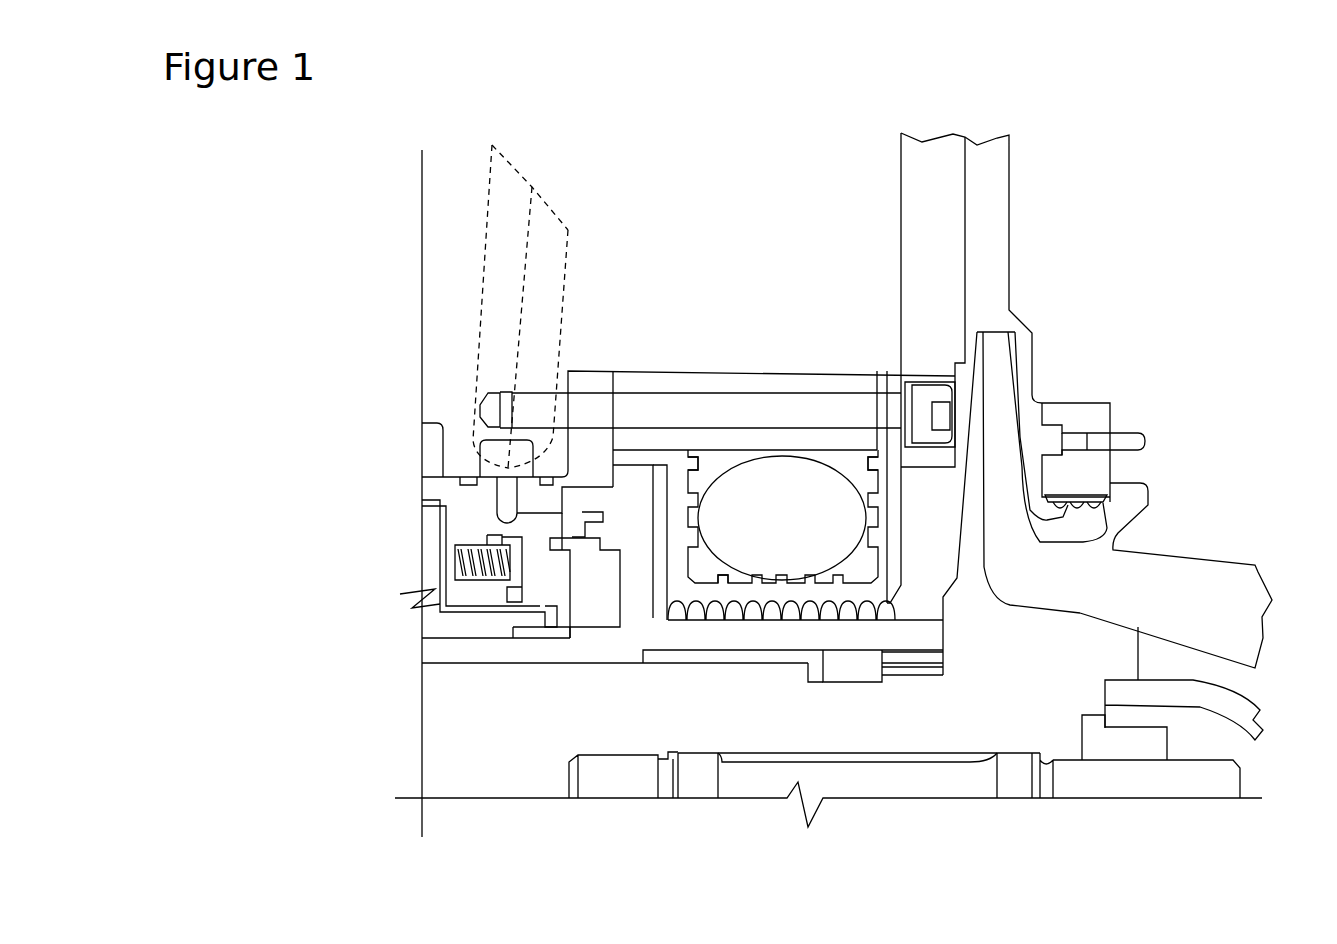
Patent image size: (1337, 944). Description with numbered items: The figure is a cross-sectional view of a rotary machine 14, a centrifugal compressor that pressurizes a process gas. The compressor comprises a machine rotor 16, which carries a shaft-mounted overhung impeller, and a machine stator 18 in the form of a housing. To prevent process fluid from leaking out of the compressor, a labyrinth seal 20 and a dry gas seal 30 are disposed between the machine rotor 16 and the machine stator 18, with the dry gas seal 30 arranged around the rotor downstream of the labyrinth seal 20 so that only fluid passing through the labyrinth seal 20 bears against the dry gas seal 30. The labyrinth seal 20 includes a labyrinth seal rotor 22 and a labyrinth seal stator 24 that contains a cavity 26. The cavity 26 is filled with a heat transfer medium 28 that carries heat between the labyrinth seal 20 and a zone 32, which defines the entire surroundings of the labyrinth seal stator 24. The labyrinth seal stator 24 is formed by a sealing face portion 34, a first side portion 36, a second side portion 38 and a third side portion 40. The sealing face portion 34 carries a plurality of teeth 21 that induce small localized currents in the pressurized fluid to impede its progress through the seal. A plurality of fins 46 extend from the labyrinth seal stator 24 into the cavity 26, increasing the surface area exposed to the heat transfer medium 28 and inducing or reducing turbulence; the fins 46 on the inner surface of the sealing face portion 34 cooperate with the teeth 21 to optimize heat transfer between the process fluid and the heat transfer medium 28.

The rotary machine 14 is at (1137, 156).
The machine rotor 16 is at (1087, 595).
The machine stator 18 is at (815, 715).
The labyrinth seal 20 is at (895, 585).
The teeth 21 is at (852, 605).
The labyrinth seal rotor 22 is at (779, 596).
The labyrinth seal stator 24 is at (889, 524).
The cavity 26 is at (714, 472).
The heat transfer medium 28 is at (772, 470).
The dry gas seal 30 is at (472, 598).
The zone 32 is at (893, 633).
The sealing face portion 34 is at (692, 608).
The first side portion 36 is at (678, 538).
The second side portion 38 is at (887, 553).
The third side portion 40 is at (822, 442).
The fins 46 is at (705, 463).